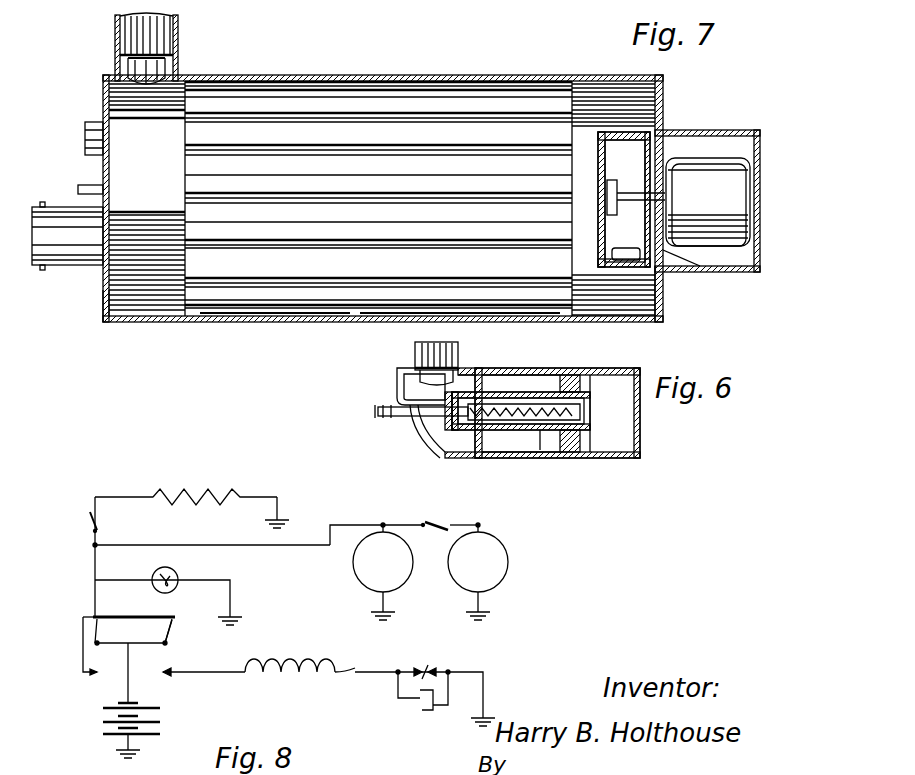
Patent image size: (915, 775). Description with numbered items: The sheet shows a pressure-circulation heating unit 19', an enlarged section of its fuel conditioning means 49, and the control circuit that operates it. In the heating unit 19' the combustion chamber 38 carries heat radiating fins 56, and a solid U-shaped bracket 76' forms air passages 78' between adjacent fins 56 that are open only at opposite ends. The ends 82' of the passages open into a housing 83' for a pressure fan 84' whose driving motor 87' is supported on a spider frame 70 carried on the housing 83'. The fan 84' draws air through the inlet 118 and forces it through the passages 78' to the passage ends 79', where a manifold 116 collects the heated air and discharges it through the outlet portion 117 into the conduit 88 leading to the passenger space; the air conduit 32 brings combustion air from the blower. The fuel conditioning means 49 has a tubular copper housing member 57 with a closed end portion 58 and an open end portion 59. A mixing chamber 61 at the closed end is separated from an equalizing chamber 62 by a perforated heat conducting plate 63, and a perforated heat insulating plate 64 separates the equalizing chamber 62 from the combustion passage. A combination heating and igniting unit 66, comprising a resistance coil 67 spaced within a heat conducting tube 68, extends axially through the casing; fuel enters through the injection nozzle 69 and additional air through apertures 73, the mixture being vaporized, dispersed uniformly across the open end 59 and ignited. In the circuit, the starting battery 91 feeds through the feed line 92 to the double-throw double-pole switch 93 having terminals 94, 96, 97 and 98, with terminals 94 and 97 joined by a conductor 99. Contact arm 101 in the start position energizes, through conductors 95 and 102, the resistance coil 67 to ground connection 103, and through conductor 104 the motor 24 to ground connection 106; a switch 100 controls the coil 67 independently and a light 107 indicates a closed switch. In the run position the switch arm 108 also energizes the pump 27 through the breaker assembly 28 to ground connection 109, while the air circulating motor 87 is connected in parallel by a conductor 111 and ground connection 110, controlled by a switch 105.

In FIG. 7, the heating unit 19' is at (383, 180).
In FIG. 7, the air conduit 32 is at (70, 265).
In FIG. 7, the combustion chamber 38 is at (415, 112).
In FIG. 7, the fins 56 is at (580, 285).
In FIG. 7, the spider frame 70 is at (757, 272).
In FIG. 7, the U-shaped bracket 76' is at (275, 336).
In FIG. 7, the air passages 78' is at (455, 327).
In FIG. 7, the passage ends 79' is at (150, 221).
In FIG. 7, the ends of the air passages 82' is at (610, 180).
In FIG. 7, the housing 83' is at (685, 307).
In FIG. 7, the pressure fan 84' is at (652, 179).
In FIG. 7, the driving motor 87' is at (715, 170).
In FIG. 7, the conduit 88 is at (178, 32).
In FIG. 7, the air heater or manifold 116 is at (128, 328).
In FIG. 7, the outlet portion 117 is at (128, 62).
In FIG. 7, the inlet 118 is at (672, 272).
In FIG. 6, the fuel conditioning means 49 is at (560, 368).
In FIG. 6, the tubular shaped housing member 57 is at (520, 452).
In FIG. 6, the closed end portion 58 is at (428, 443).
In FIG. 6, the open end portion 59 is at (640, 430).
In FIG. 6, the mixing chamber 61 is at (405, 392).
In FIG. 6, the equalizing chamber 62 is at (510, 372).
In FIG. 6, the perforated heat conducting plate 63 is at (450, 388).
In FIG. 6, the perforated heat insulating plate 64 is at (585, 375).
In FIG. 6, the combination heating and igniting unit 66 is at (535, 440).
In FIG. 6, the resistance coil 67 is at (582, 414).
In FIG. 8, the resistance coil 67 is at (210, 490).
In FIG. 6, the heat conducting tube 68 is at (505, 395).
In FIG. 6, the injection nozzle 69 is at (452, 355).
In FIG. 6, the apertures 73 is at (470, 373).
In FIG. 8, the motor 24 is at (365, 580).
In FIG. 8, the pump 27 is at (342, 668).
In FIG. 8, the breaker assembly 28 is at (440, 670).
In FIG. 8, the air circulating motor 87 is at (492, 562).
In FIG. 8, the starting battery 91 is at (158, 717).
In FIG. 8, the feed line 92 is at (127, 676).
In FIG. 8, the double-throw double-pole switch 93 is at (142, 612).
In FIG. 8, the terminal 94 is at (93, 616).
In FIG. 8, the conductor 95 is at (95, 568).
In FIG. 8, the terminal 96 is at (165, 618).
In FIG. 8, the terminal 97 is at (90, 678).
In FIG. 8, the terminal 98 is at (170, 671).
In FIG. 8, the conductor 99 is at (83, 648).
In FIG. 8, the switch 100 is at (90, 524).
In FIG. 8, the contact arm 101 is at (100, 636).
In FIG. 8, the conductor 102 is at (95, 497).
In FIG. 8, the ground connection 103 is at (278, 497).
In FIG. 8, the conductor 104 is at (298, 547).
In FIG. 8, the switch 105 is at (432, 522).
In FIG. 8, the ground connection 106 is at (384, 602).
In FIG. 8, the light 107 is at (175, 573).
In FIG. 8, the switch arm 108 is at (168, 635).
In FIG. 8, the ground connection 109 is at (484, 685).
In FIG. 8, the ground connection 110 is at (484, 604).
In FIG. 8, the conductor 111 is at (480, 524).